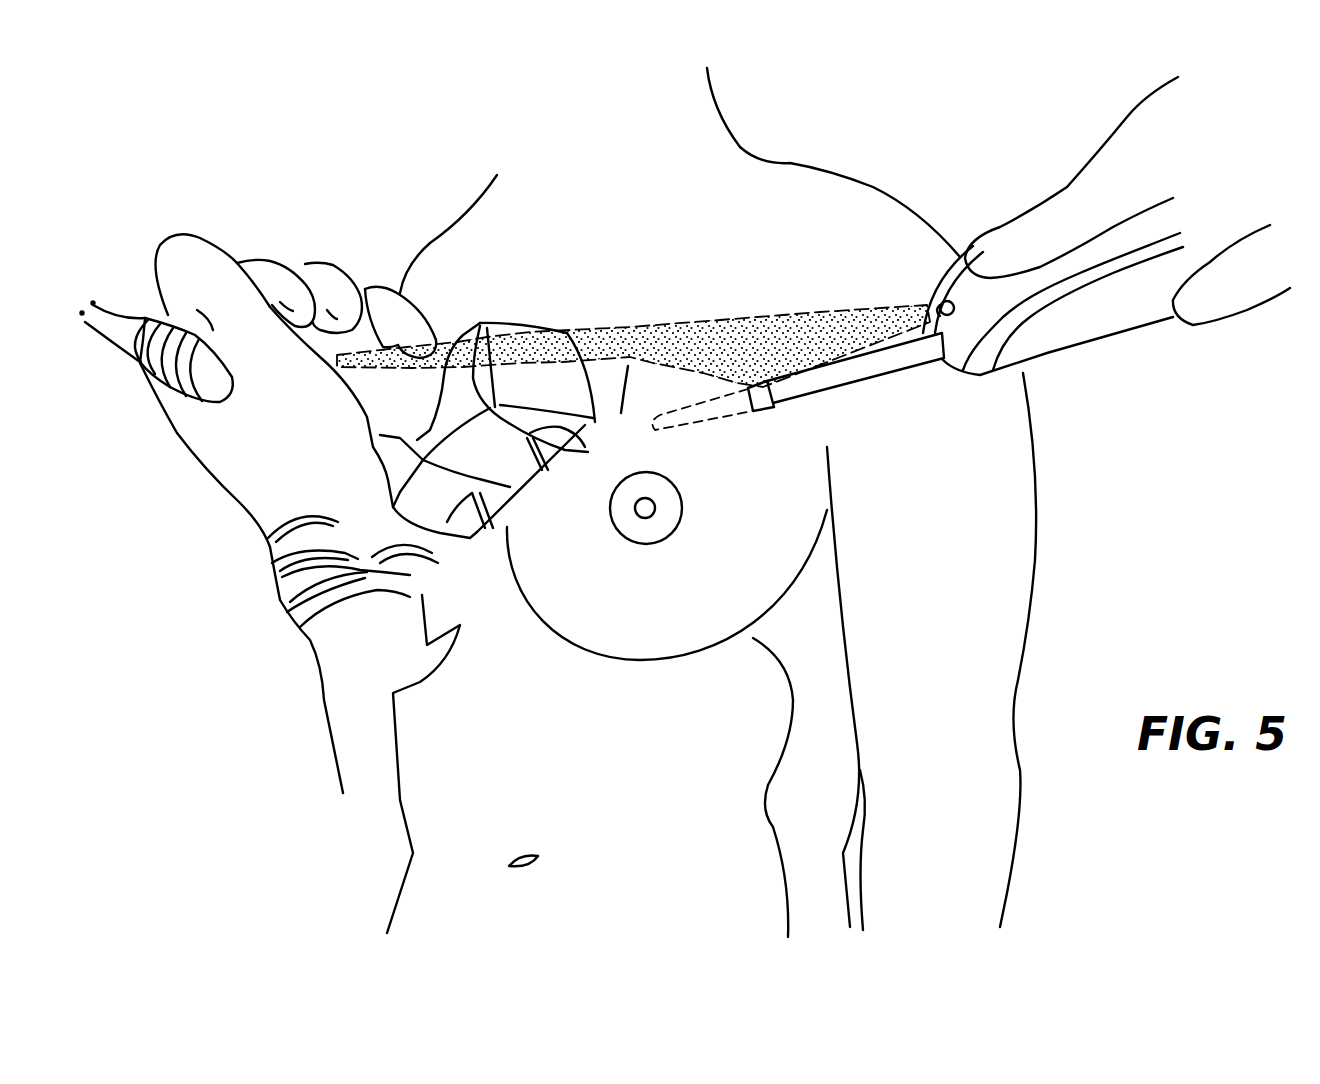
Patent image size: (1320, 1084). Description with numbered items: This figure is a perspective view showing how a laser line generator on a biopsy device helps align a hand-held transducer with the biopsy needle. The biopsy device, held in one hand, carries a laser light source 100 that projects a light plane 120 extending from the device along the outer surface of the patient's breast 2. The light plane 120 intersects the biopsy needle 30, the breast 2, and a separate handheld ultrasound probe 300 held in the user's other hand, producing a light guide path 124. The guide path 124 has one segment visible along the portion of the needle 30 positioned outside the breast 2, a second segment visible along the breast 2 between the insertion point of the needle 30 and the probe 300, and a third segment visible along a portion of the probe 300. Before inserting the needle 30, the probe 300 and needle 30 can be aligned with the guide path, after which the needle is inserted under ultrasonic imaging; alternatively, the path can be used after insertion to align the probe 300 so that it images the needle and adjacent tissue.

The patient's breast 2 is at (734, 559).
The biopsy needle 30 is at (690, 428).
The laser light source 100 is at (926, 292).
The light plane 120 is at (673, 343).
The light guide path 124 is at (567, 447).
The handheld ultrasound probe 300 is at (482, 317).